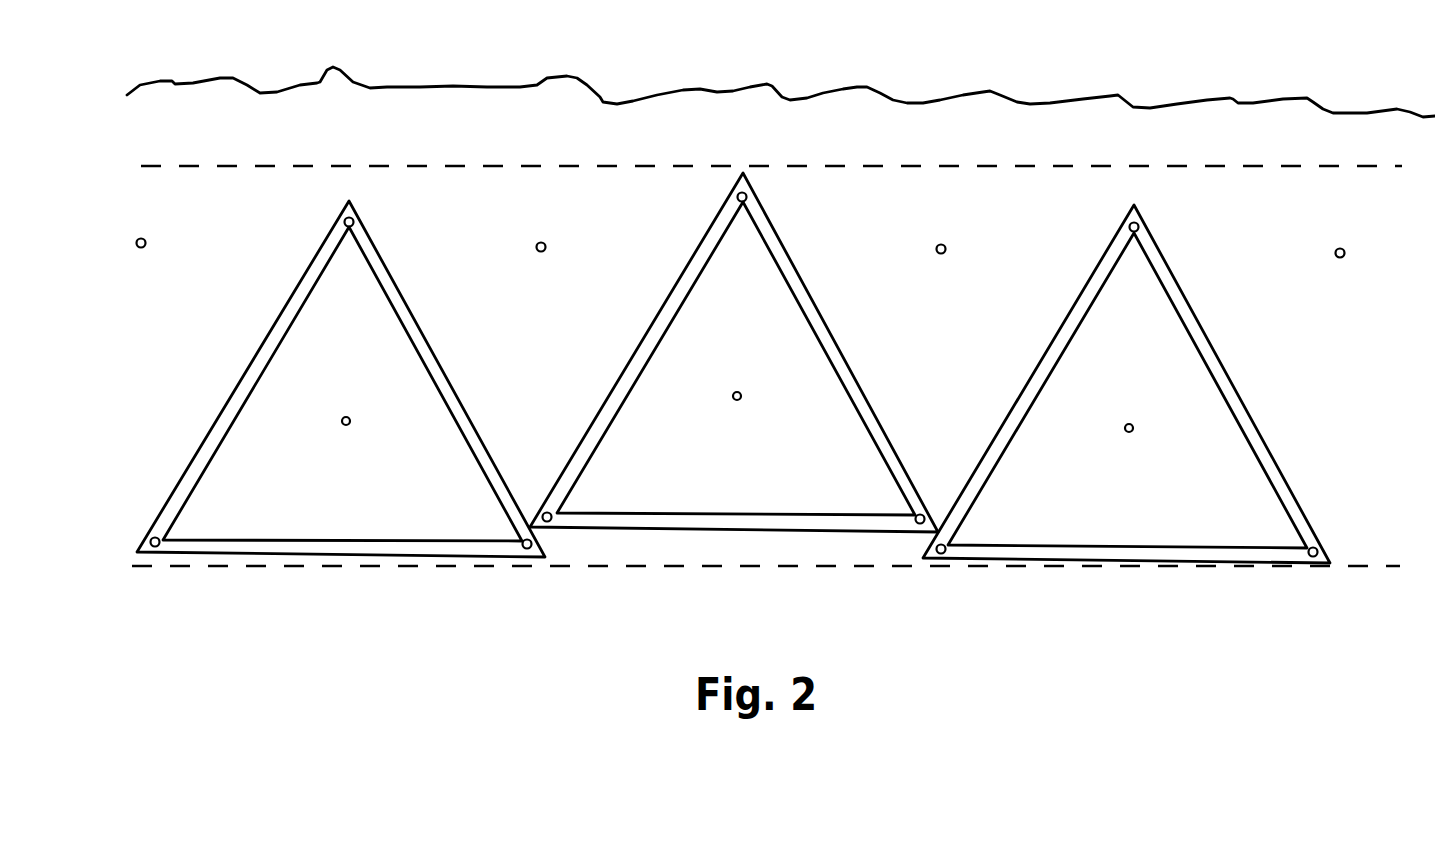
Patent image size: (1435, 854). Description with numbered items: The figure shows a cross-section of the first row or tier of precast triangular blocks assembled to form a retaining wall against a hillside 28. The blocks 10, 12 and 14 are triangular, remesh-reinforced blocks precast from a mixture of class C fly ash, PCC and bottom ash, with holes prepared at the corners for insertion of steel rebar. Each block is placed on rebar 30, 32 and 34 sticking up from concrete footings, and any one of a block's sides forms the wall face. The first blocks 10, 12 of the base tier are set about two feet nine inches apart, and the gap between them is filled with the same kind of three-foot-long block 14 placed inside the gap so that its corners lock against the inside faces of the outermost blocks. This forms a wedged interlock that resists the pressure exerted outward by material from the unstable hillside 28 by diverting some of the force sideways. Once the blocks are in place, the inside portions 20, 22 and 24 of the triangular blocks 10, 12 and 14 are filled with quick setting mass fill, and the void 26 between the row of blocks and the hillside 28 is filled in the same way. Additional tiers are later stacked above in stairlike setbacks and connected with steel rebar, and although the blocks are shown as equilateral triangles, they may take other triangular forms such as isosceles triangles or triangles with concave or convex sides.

The block 10 is at (208, 428).
The block 12 is at (1238, 380).
The block 14 is at (820, 305).
The inside portion 20 is at (307, 363).
The inside portion 22 is at (1110, 337).
The inside portion 24 is at (705, 322).
The void 26 is at (968, 147).
The hillside 28 is at (713, 77).
The rebar 30 is at (345, 425).
The rebar 32 is at (1130, 434).
The rebar 34 is at (736, 400).